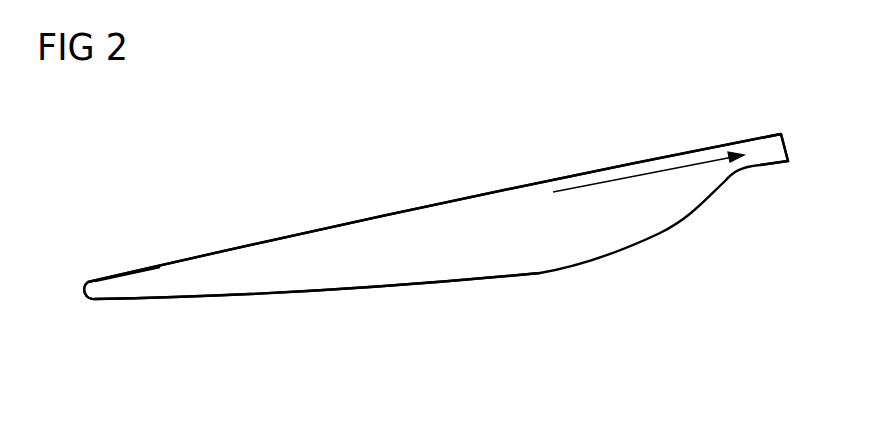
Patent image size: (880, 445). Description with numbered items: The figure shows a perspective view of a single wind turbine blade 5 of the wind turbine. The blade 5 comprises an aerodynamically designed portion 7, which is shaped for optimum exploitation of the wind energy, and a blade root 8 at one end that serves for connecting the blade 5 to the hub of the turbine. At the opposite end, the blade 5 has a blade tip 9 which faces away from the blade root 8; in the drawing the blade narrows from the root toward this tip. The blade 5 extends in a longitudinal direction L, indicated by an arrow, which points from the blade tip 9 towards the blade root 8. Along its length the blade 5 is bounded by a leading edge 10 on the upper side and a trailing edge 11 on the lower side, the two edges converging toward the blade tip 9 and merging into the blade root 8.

The blade 5 is at (443, 190).
The aerodynamically designed portion 7 is at (135, 283).
The blade root 8 is at (767, 151).
The blade tip 9 is at (88, 289).
The leading edge 10 is at (275, 237).
The trailing edge 11 is at (363, 288).
The longitudinal direction L is at (650, 171).